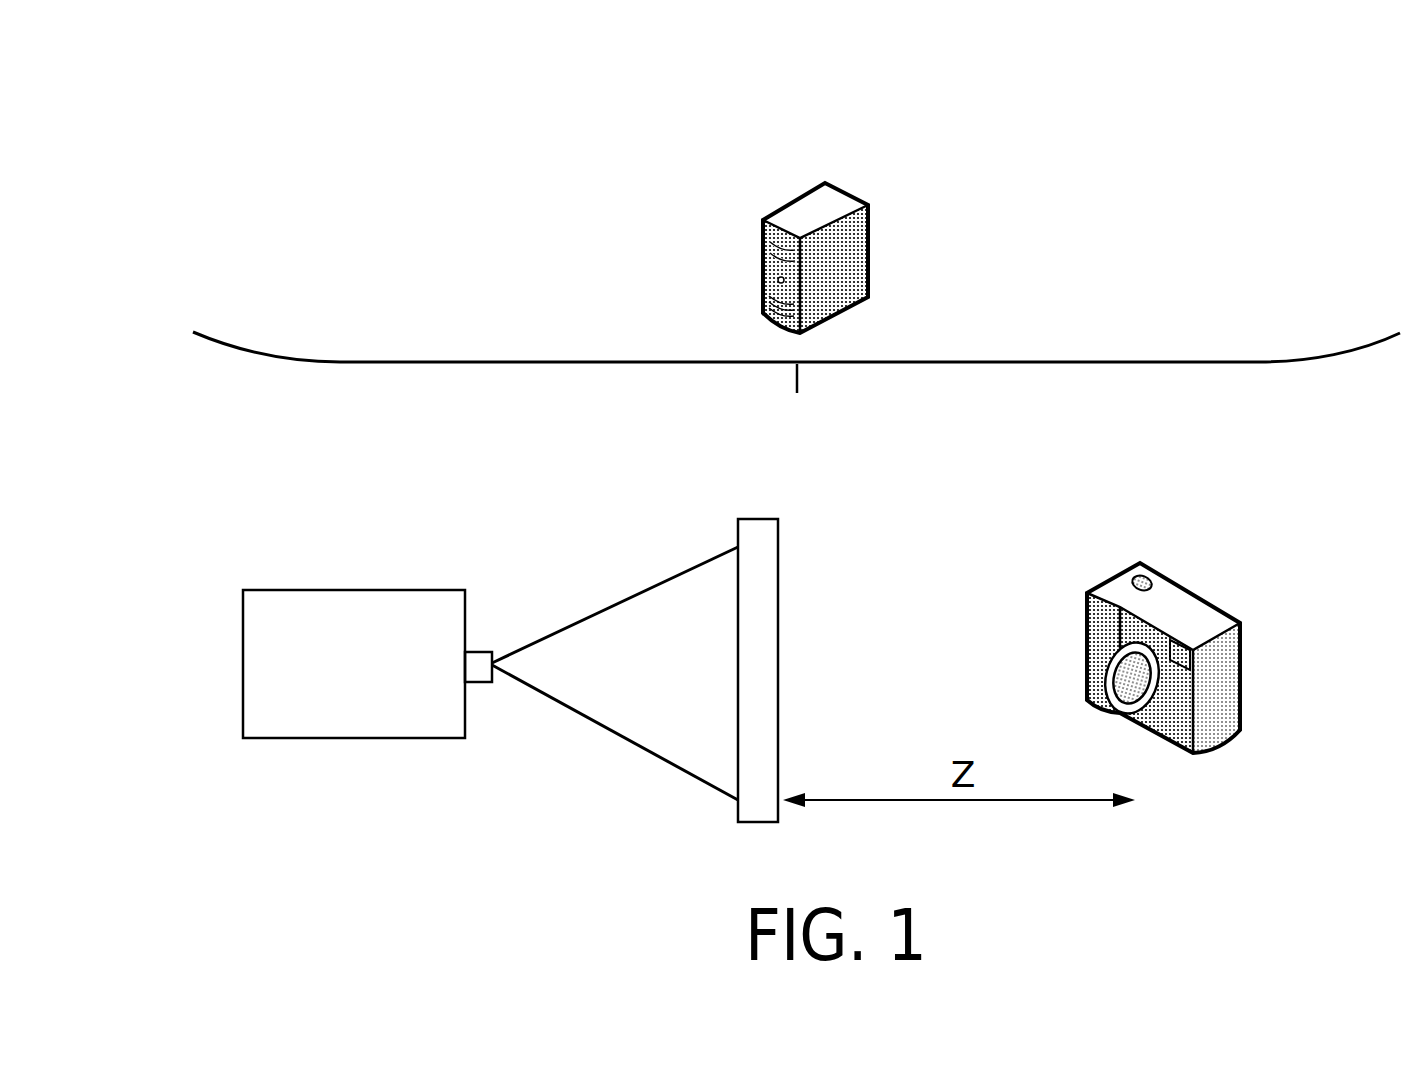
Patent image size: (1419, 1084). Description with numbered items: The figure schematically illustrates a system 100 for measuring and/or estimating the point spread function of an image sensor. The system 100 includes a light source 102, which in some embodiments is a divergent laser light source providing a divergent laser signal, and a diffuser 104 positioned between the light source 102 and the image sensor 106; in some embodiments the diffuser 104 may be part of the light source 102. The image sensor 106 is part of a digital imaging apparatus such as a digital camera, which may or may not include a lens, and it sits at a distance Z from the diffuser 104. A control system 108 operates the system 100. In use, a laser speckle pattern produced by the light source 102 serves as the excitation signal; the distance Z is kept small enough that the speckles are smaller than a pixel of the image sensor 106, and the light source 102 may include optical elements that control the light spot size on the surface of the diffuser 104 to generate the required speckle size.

The system 100 is at (182, 74).
The light source 102 is at (368, 694).
The diffuser 104 is at (704, 503).
The image sensor 106 is at (1232, 558).
The control system 108 is at (874, 168).